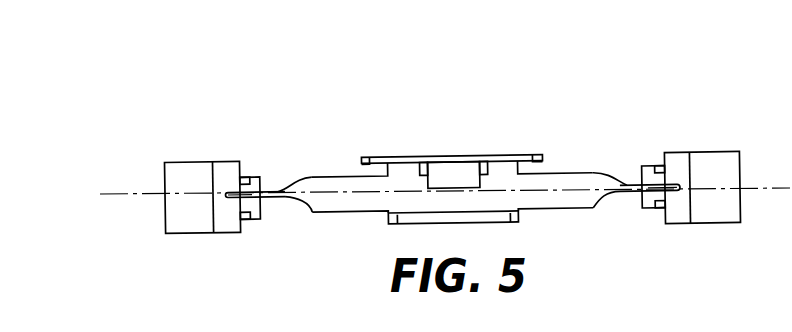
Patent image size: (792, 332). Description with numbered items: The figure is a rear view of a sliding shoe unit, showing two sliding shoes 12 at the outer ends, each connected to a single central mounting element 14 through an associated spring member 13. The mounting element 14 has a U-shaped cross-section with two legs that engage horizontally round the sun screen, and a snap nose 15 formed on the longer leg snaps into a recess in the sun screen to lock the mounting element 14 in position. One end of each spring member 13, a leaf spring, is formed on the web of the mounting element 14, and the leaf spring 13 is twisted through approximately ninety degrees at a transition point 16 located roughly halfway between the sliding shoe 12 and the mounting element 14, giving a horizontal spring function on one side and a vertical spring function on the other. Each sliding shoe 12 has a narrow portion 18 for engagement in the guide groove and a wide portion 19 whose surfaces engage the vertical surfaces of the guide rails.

The sliding shoe 12 is at (175, 182).
The spring member 13 is at (337, 180).
The mounting element 14 is at (528, 158).
The snap nose 15 is at (457, 177).
The transition point 16 is at (300, 192).
The narrow portion 18 is at (252, 181).
The wide portion 19 is at (225, 172).